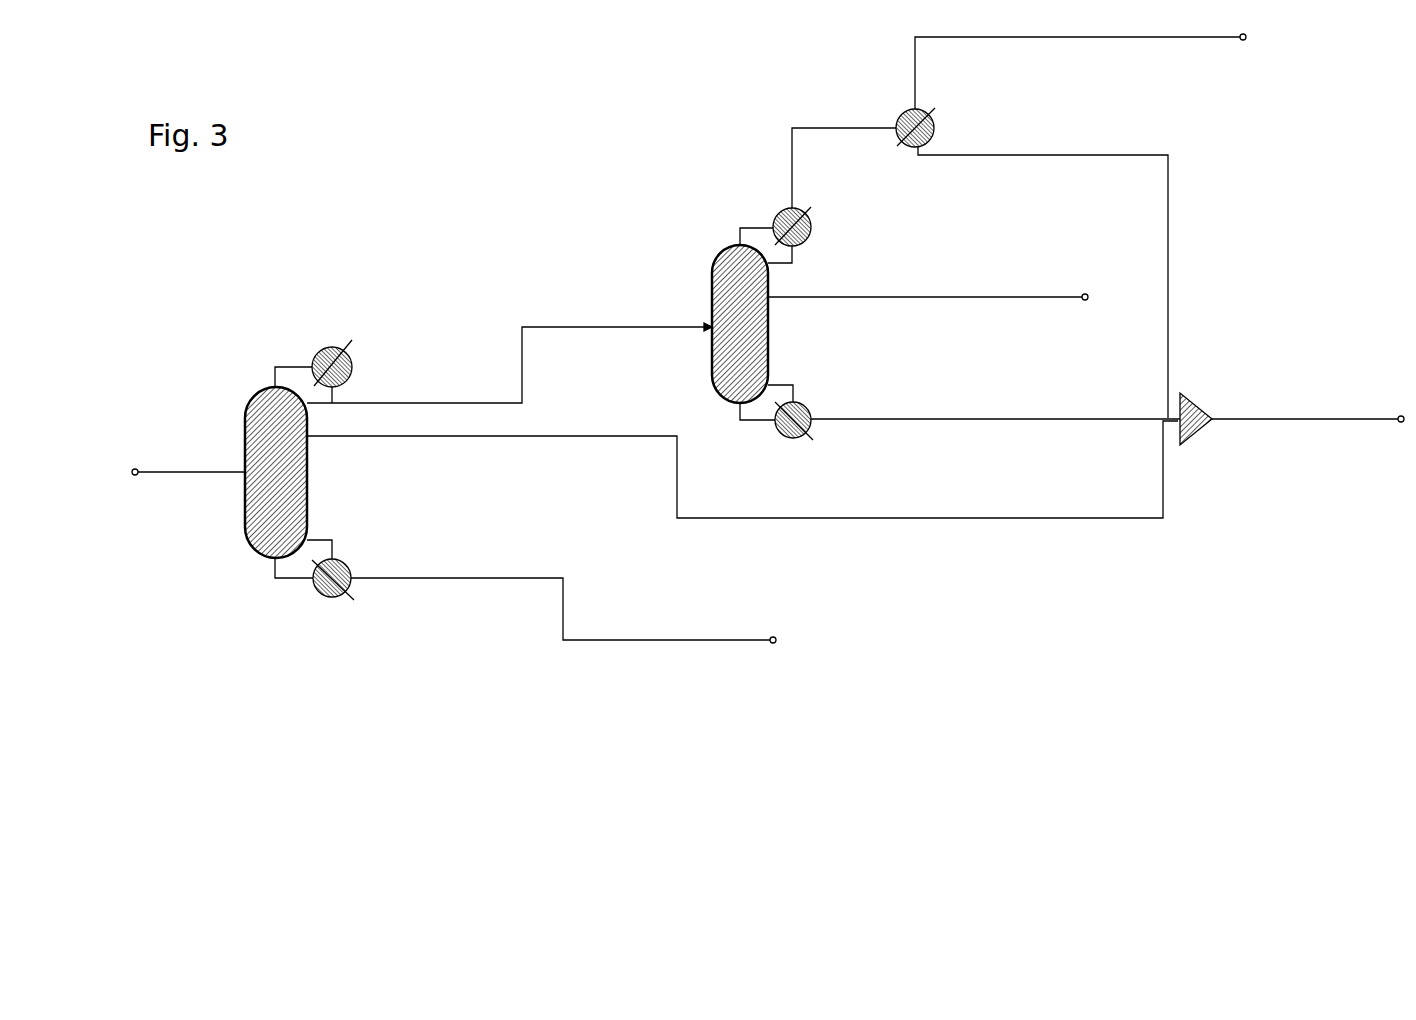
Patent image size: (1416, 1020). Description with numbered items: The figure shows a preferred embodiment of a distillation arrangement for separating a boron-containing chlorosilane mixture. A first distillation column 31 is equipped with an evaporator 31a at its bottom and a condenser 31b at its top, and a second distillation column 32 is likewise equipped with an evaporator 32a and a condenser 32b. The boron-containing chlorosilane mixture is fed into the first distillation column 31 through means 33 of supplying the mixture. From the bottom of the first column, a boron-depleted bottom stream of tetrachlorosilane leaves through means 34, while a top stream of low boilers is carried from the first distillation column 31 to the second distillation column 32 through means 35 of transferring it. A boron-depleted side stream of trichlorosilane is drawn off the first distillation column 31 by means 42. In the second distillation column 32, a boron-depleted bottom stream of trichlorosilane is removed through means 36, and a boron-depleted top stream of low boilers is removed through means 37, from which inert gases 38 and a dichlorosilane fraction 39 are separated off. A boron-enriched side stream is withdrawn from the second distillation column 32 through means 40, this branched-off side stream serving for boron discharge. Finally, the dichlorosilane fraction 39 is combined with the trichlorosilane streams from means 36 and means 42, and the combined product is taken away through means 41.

The first distillation column 31 is at (247, 387).
The evaporator 31a is at (360, 563).
The condenser 31b is at (345, 342).
The second distillation column 32 is at (707, 285).
The evaporator 32a is at (818, 407).
The condenser 32b is at (817, 222).
The means of supplying a boron-containing chlorosilane mixture 33 is at (173, 467).
The means of removing a boron-depleted bottom stream of tetrachlorosilane 34 is at (643, 633).
The means of transferring a top stream of low boilers 35 is at (580, 320).
The means of removing a boron-depleted bottom stream of trichlorosilane 36 is at (1055, 413).
The means of removing a boron-depleted top stream of low boilers 37 is at (817, 123).
The inert gases 38 is at (1102, 43).
The dichlorosilane fraction 39 is at (1173, 310).
The means of removing a boron-enriched side stream 40 is at (918, 292).
The means for removing the combined dichlorosilane and trichlorosilane streams 41 is at (1333, 420).
The means of removing a boron-depleted side stream of trichlorosilane 42 is at (1015, 520).